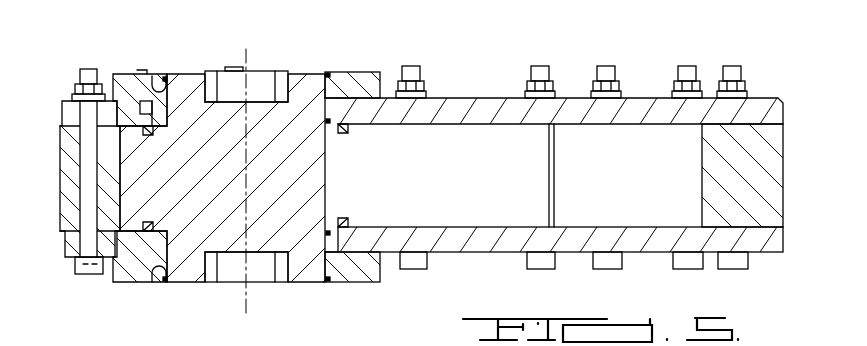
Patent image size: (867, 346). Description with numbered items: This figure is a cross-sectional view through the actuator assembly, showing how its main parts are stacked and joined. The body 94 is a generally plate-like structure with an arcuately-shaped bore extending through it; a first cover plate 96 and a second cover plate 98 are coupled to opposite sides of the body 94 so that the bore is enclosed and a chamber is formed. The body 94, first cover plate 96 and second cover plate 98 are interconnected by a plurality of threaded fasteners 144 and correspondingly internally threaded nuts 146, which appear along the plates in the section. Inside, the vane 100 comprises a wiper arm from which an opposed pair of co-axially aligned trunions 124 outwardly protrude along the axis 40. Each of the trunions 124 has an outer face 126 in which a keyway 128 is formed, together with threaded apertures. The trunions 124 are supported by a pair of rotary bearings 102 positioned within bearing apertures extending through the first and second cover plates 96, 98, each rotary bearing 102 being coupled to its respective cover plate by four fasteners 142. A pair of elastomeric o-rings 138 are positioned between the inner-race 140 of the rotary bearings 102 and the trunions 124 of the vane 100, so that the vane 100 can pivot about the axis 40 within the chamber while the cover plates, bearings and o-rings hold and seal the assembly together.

The axis 40 is at (245, 232).
The body 94 is at (775, 138).
The first cover plate 96 is at (516, 104).
The second cover plate 98 is at (578, 245).
The vane 100 is at (130, 163).
The rotary bearings 102 is at (113, 75).
The trunions 124 is at (165, 77).
The outer face 126 is at (205, 72).
The keyway 128 is at (262, 83).
The elastomeric o-rings 138 is at (160, 282).
The inner-race 140 is at (143, 104).
The fasteners 142 is at (331, 75).
The threaded fasteners 144 is at (427, 262).
The internally threaded nuts 146 is at (424, 90).